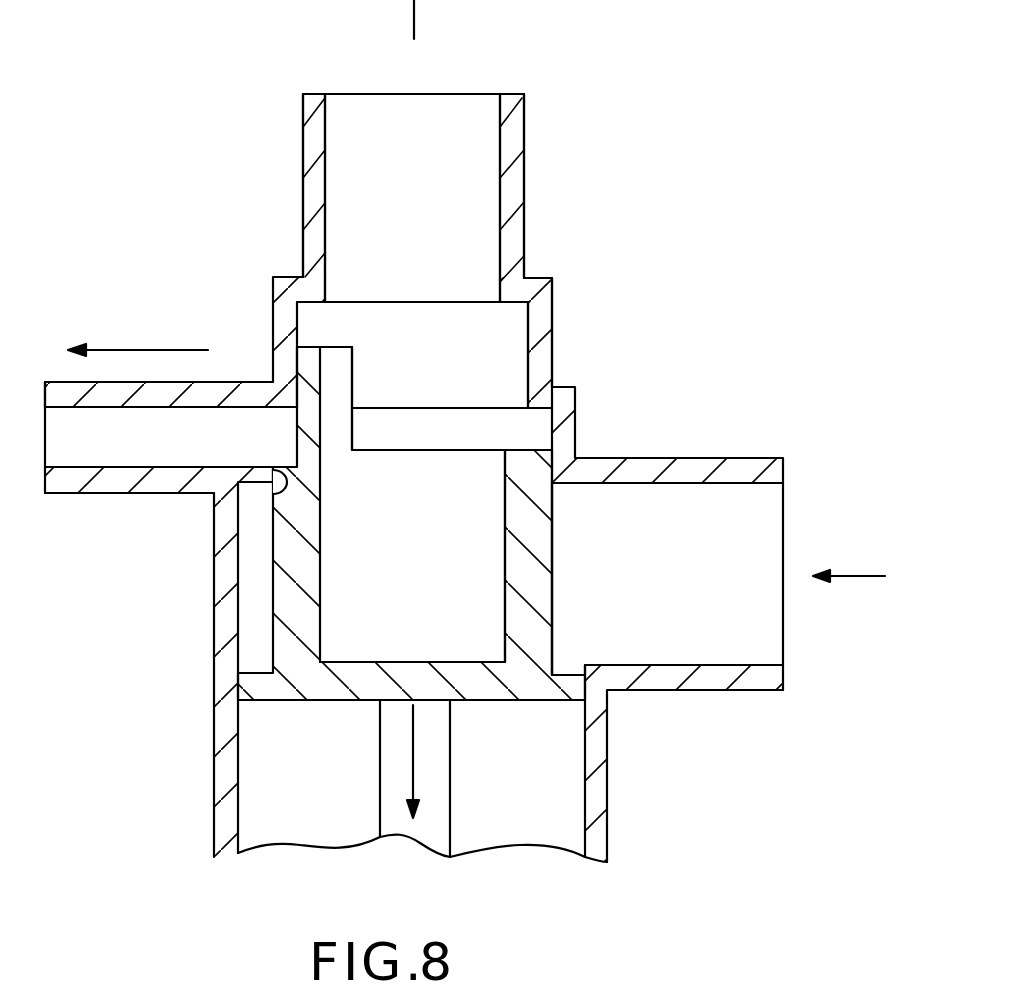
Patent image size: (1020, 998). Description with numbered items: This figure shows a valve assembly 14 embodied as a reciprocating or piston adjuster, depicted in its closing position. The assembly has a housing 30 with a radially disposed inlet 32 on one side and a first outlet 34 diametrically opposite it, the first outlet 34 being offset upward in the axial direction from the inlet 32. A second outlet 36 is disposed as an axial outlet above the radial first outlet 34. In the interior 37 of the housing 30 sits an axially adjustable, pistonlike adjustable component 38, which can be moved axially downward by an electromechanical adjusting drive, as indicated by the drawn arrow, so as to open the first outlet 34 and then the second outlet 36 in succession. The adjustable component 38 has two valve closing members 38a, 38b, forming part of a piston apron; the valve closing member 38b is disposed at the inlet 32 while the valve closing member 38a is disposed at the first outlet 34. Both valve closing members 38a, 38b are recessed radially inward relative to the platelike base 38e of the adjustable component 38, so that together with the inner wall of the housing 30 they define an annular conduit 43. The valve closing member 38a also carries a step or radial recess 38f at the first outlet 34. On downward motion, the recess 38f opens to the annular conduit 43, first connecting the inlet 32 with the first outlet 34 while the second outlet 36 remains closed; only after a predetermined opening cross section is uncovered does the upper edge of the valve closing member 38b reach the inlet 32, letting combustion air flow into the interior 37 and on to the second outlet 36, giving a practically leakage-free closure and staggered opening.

The valve assembly 14 is at (615, 325).
The housing 30 is at (577, 420).
The inlet 32 is at (760, 665).
The first outlet 34 is at (73, 408).
The second outlet 36 is at (500, 130).
The interior 37 is at (577, 628).
The adjustable component 38 is at (504, 702).
The valve closing member 38a is at (288, 488).
The valve closing member 38b is at (518, 477).
The platelike base 38e is at (328, 690).
The step or radial recess 38f is at (297, 430).
The annular conduit 43 is at (257, 598).